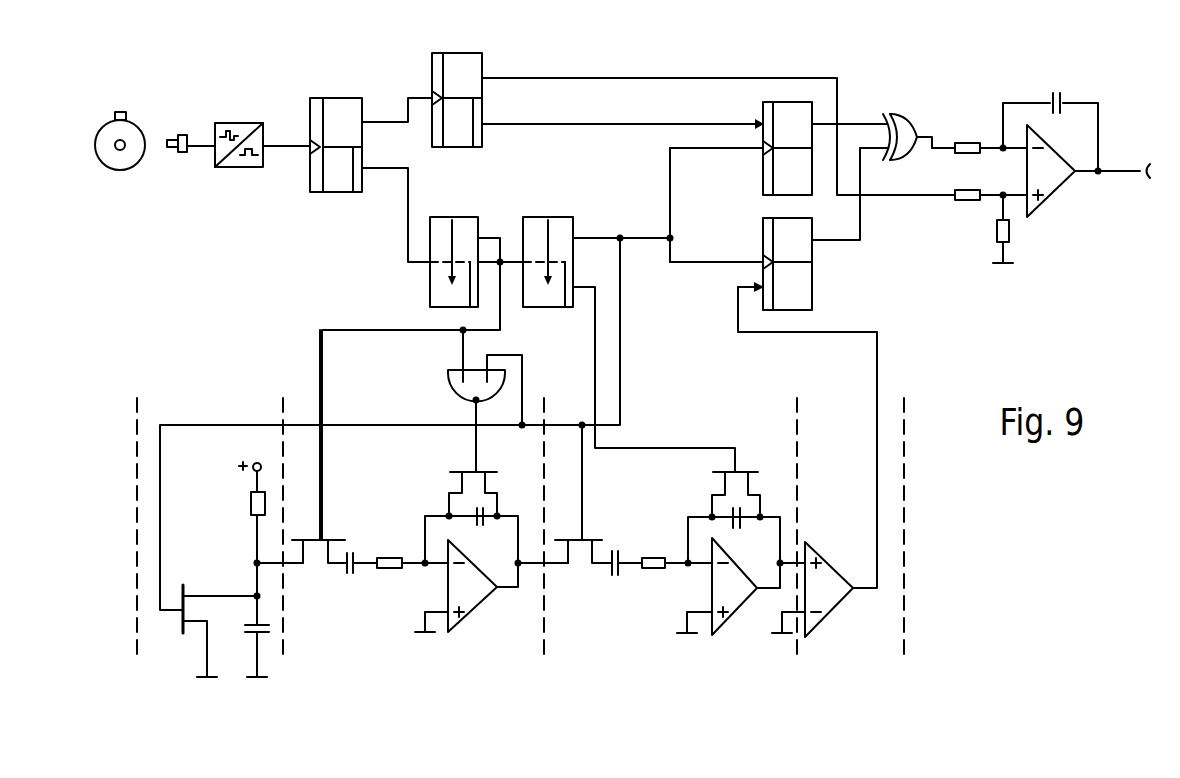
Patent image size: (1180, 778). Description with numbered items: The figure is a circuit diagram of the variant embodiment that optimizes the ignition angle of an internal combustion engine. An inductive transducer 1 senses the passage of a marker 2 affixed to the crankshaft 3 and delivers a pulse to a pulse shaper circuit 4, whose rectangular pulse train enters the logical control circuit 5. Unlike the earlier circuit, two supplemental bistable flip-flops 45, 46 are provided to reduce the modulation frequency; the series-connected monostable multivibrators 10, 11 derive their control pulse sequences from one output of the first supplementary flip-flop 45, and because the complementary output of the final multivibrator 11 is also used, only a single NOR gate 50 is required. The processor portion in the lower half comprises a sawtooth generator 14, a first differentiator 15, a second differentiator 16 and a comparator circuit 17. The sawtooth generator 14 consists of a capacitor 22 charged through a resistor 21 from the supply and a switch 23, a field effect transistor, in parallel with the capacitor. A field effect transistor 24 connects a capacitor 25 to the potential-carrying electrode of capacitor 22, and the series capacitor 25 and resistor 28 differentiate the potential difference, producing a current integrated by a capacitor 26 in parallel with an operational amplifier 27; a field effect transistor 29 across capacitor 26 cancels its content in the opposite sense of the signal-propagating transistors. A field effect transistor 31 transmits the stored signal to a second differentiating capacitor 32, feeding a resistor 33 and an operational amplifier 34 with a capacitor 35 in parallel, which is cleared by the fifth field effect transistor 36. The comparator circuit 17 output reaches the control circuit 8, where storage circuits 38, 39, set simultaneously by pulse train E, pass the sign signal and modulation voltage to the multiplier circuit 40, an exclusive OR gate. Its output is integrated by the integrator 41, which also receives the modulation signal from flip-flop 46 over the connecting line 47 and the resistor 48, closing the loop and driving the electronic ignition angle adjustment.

The inductive transducer 1 is at (181, 155).
The marker 2 is at (127, 116).
The crankshaft 3 is at (100, 152).
The pulse shaper circuit 4 is at (243, 121).
The logical control circuit 5 is at (406, 273).
The control circuit 8 is at (918, 248).
The first monostable multivibrator 10 is at (453, 214).
The second monostable multivibrator 11 is at (557, 214).
The sawtooth generator 14 is at (295, 536).
The first differentiator 15 is at (483, 590).
The second differentiator 16 is at (680, 585).
The comparator circuit 17 is at (855, 652).
The resistor 21 is at (250, 497).
The capacitor 22 is at (248, 628).
The switch 23 is at (176, 624).
The field effect transistor 24 is at (323, 535).
The capacitor 25 is at (351, 575).
The capacitor 26 is at (482, 509).
The operational amplifier 27 is at (470, 600).
The resistor 28 is at (388, 552).
The field effect transistor 29 is at (468, 468).
The field effect transistor 31 is at (586, 535).
The second differentiating capacitor 32 is at (615, 578).
The resistor 33 is at (656, 558).
The operational amplifier 34 is at (730, 600).
The capacitor 35 is at (746, 511).
The fifth field effect transistor 36 is at (740, 465).
The storage circuit 38 is at (803, 290).
The storage circuit 39 is at (766, 104).
The multiplier circuit 40 is at (906, 130).
The integrator 41 is at (1055, 185).
The supplemental bistable flip-flop 45 is at (336, 100).
The supplemental bistable flip-flop 46 is at (470, 58).
The connecting line 47 is at (646, 77).
The resistor 48 is at (960, 201).
The NOR gate 50 is at (450, 377).